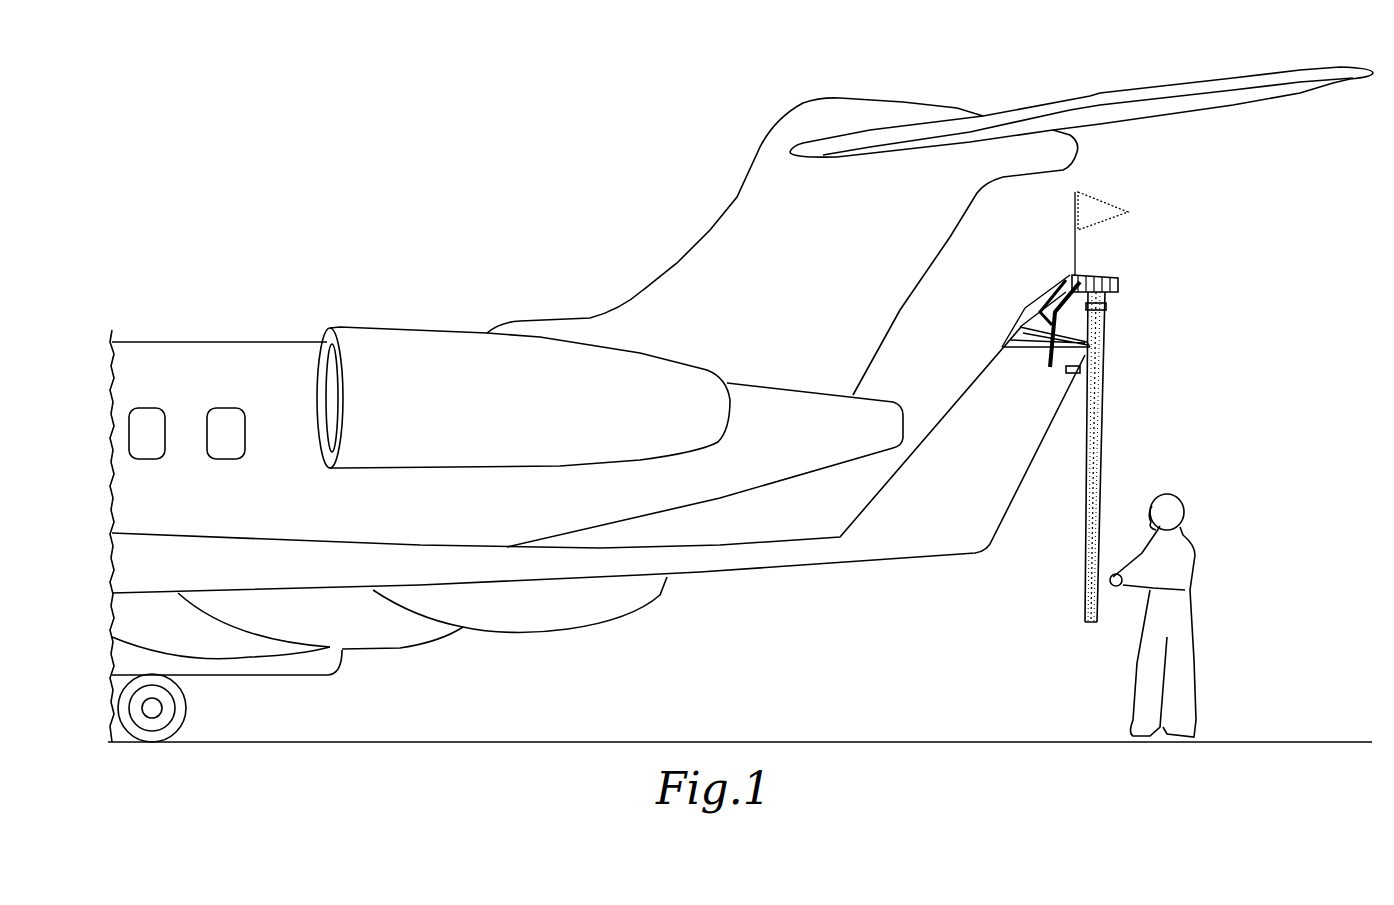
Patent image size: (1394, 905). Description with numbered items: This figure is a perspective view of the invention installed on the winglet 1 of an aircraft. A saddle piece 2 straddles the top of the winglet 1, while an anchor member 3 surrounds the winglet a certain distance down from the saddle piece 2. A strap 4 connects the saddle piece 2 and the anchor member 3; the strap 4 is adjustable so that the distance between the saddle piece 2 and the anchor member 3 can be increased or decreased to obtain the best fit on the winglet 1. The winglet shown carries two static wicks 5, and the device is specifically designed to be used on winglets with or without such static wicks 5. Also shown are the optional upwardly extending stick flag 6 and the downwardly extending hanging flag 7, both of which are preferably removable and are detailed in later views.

The winglet 1 is at (1019, 470).
The saddle piece 2 is at (1112, 272).
The anchor member 3 is at (1021, 316).
The strap 4 is at (1047, 305).
The static wicks 5 is at (1103, 307).
The stick flag 6 is at (1098, 203).
The hanging flag 7 is at (1099, 465).